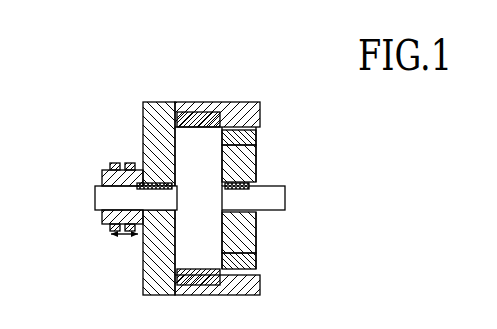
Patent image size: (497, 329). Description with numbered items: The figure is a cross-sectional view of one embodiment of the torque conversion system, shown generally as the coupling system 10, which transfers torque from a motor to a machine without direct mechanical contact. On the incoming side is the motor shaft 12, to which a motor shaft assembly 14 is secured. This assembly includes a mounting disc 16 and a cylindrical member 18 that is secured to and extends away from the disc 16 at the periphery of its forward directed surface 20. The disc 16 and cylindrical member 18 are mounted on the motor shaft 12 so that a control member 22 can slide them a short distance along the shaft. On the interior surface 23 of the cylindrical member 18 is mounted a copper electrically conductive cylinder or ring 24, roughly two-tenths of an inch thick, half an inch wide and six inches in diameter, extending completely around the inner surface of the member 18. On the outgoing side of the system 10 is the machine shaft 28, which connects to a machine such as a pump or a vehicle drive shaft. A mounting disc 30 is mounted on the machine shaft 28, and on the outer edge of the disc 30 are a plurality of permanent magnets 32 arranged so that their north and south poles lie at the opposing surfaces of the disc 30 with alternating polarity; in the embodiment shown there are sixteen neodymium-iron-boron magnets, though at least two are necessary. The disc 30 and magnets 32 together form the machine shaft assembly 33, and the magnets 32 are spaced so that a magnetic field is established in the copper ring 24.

The coupling system 10 is at (202, 163).
The motor shaft 12 is at (94, 197).
The motor shaft assembly 14 is at (199, 156).
The mounting disc 16 is at (143, 121).
The cylindrical member 18 is at (218, 101).
The forward directed surface 20 is at (210, 166).
The control member 22 is at (117, 218).
The interior surface 23 is at (258, 124).
The electrically conductive cylinder 24 is at (196, 268).
The machine shaft 28 is at (284, 212).
The mounting disc 30 is at (258, 230).
The permanent magnets 32 is at (257, 138).
The machine shaft assembly 33 is at (293, 168).